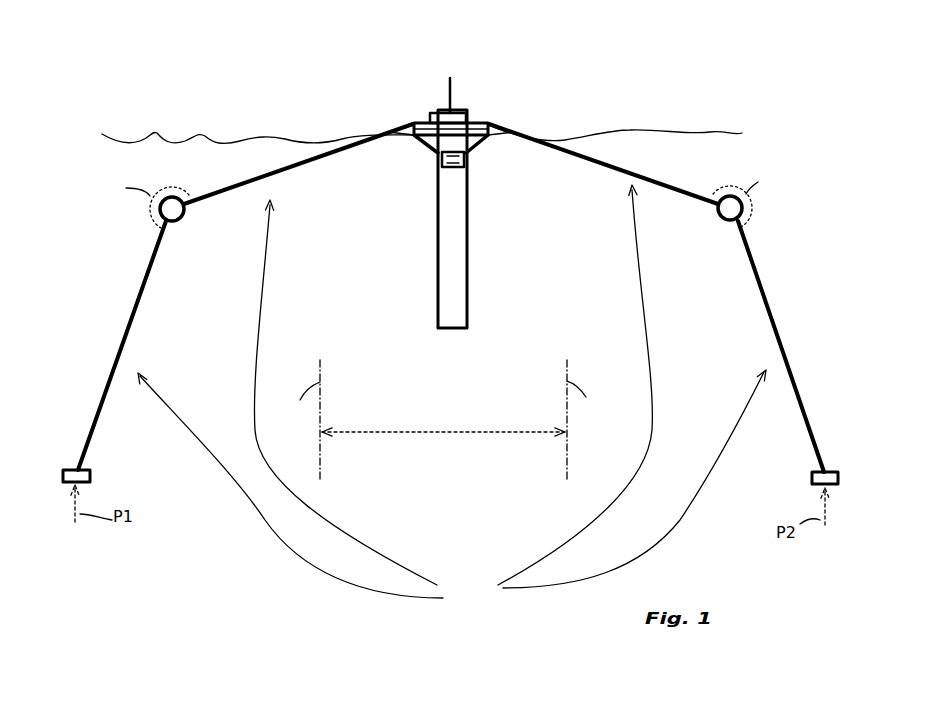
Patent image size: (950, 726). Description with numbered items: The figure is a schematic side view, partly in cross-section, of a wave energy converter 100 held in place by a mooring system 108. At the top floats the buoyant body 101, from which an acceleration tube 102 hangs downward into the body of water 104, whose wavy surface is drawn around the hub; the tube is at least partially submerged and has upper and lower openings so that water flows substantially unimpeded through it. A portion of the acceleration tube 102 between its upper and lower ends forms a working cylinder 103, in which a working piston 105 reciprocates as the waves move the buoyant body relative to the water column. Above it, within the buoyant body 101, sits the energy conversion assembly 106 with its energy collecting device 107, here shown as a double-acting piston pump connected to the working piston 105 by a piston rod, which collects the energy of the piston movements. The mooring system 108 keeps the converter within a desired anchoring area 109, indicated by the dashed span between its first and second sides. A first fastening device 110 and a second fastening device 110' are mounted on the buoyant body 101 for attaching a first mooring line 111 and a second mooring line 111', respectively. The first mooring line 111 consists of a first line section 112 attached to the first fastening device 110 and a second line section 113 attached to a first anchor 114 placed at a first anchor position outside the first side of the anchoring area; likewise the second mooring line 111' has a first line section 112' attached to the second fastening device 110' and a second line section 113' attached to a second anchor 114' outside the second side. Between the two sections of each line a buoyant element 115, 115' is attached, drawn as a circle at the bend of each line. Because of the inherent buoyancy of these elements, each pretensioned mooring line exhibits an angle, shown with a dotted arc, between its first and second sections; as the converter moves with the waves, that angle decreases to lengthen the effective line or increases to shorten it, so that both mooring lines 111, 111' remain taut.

The wave energy converter 100 is at (370, 36).
The buoyant body 101 is at (452, 96).
The acceleration tube 102 is at (490, 238).
The working cylinder 103 is at (467, 162).
The body of water 104 is at (155, 133).
The working piston 105 is at (448, 166).
The energy conversion assembly 106 is at (423, 92).
The energy collecting device 107 is at (453, 76).
The mooring system 108 is at (452, 392).
The desired anchoring area 109 is at (449, 437).
The first fastening device 110 is at (428, 121).
The second fastening device 110' is at (527, 99).
The first mooring line 111 is at (220, 285).
The second mooring line 111' is at (675, 294).
The first line section 112 is at (298, 146).
The first line section 112' is at (603, 148).
The second line section 113 is at (97, 345).
The second line section 113' is at (800, 346).
The first anchor 114 is at (107, 472).
The second anchor 114' is at (783, 484).
The buoyant element 115 is at (194, 231).
The buoyant element 115' is at (712, 229).